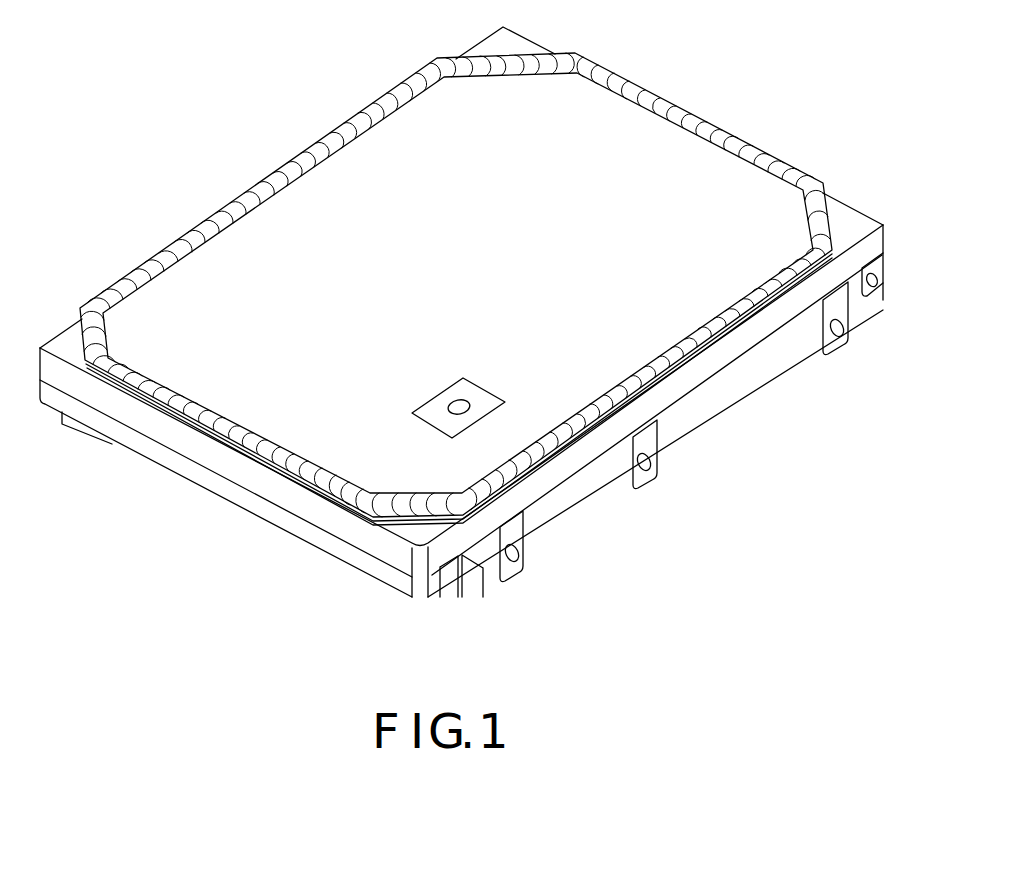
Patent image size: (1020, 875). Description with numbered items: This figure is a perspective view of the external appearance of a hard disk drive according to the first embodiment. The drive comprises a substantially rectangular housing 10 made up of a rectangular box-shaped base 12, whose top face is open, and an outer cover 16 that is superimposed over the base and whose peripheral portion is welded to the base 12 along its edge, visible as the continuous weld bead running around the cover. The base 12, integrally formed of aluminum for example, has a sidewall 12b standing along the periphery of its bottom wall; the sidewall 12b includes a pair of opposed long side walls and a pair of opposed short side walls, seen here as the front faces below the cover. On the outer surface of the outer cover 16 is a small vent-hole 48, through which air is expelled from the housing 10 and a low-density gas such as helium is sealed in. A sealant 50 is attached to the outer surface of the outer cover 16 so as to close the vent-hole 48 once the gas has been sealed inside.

The housing 10 is at (461, 315).
The base 12 is at (461, 315).
The sidewall 12b is at (285, 522).
The outer cover 16 is at (456, 287).
The vent-hole 48 is at (450, 413).
The sealant 50 is at (463, 400).